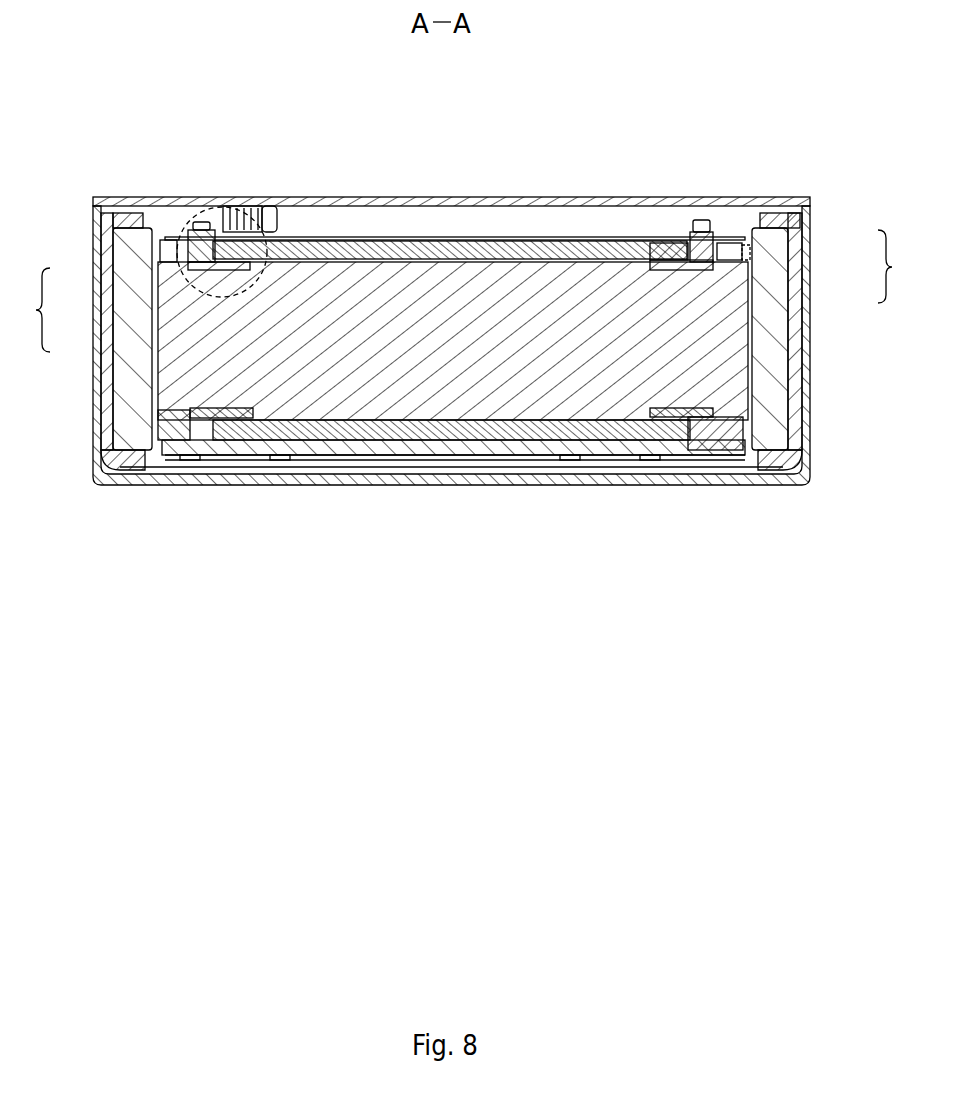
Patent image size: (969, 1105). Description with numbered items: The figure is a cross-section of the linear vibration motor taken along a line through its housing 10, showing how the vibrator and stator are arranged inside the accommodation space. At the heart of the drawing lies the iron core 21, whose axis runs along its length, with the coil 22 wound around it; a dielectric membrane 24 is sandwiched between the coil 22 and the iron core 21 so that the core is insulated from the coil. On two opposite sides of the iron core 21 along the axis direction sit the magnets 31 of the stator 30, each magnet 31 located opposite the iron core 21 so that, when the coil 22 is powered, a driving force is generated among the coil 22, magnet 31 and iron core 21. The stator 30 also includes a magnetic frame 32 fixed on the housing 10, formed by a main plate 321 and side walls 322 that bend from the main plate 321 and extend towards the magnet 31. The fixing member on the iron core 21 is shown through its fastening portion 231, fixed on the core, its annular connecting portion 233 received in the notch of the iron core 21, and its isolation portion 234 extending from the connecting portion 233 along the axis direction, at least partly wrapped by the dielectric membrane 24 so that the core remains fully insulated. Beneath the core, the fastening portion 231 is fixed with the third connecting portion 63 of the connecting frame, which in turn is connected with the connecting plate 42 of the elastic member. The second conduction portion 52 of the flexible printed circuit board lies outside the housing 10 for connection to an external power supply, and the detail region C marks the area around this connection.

The housing 10 is at (232, 480).
The second conduction portion 52 is at (213, 196).
The detail region C is at (266, 231).
The stator 30 is at (28, 310).
The magnet 31 is at (135, 295).
The magnetic frame 32 is at (110, 328).
The main plate 321 is at (790, 280).
The side wall 322 is at (780, 218).
The iron core 21 is at (405, 295).
The coil 22 is at (557, 249).
The dielectric membrane 24 is at (487, 258).
The connecting portion 233 is at (705, 250).
The isolation portion 234 is at (663, 250).
The fastening portion 231 is at (710, 437).
The connecting plate 42 is at (407, 453).
The third connecting portion 63 is at (500, 442).